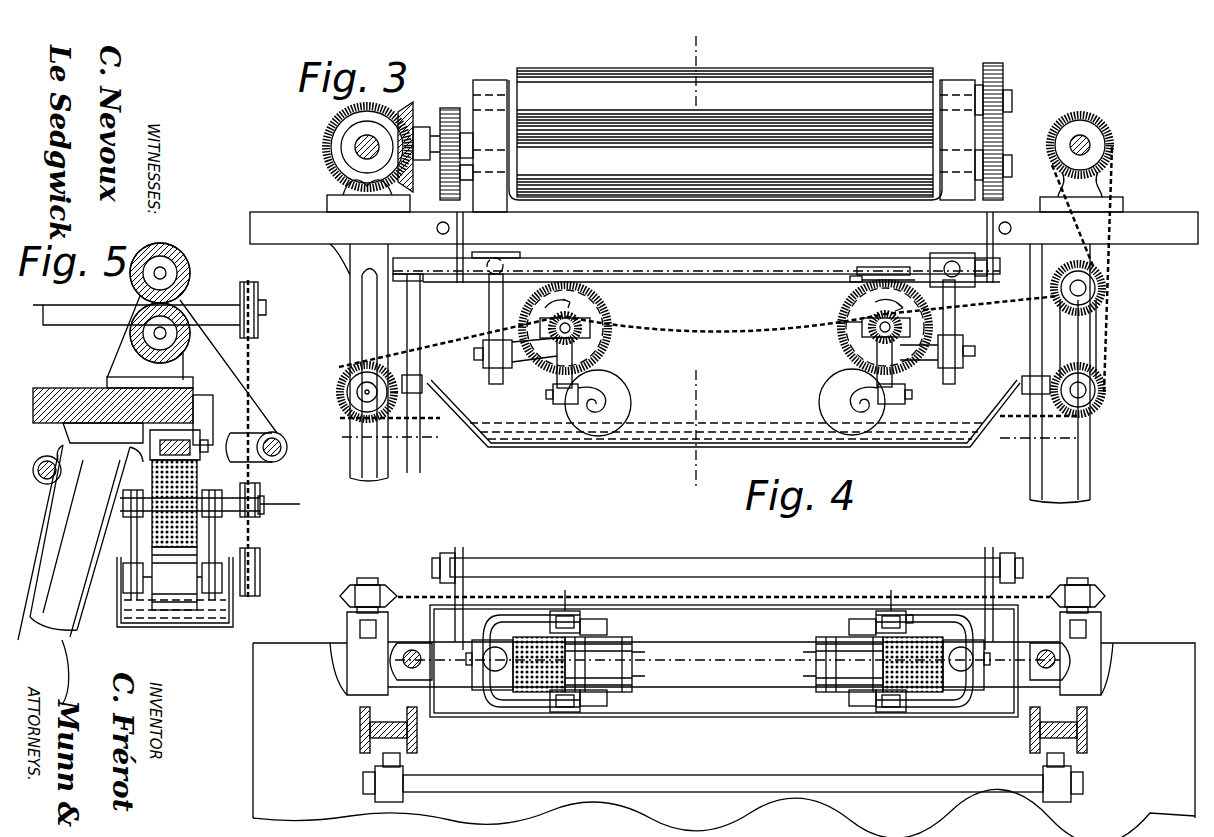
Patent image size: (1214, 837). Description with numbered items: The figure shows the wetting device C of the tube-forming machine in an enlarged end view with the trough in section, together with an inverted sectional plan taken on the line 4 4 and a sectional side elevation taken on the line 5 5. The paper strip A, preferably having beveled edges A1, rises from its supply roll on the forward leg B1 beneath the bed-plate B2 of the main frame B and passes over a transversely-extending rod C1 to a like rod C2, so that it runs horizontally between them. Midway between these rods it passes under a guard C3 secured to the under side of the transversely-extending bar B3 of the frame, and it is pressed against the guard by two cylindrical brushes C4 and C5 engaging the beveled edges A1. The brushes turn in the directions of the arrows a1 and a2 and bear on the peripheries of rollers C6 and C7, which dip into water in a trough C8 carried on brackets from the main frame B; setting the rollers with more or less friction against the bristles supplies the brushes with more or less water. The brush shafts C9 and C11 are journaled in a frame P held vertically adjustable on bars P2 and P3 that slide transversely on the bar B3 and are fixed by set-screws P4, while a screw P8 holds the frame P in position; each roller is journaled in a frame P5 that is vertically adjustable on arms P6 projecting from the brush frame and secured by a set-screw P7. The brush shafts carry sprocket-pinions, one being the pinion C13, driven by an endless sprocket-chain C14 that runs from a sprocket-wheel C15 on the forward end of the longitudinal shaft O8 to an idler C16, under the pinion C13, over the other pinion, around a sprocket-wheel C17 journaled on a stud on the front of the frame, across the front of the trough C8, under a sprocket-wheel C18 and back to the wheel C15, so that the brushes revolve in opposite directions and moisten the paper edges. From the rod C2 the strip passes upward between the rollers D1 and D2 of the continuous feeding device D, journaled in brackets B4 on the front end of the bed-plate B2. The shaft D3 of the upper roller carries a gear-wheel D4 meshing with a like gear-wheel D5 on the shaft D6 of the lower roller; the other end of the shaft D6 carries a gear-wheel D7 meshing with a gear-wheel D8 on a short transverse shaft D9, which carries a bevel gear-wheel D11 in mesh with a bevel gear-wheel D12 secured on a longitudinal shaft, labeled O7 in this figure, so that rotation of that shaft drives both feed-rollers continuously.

In FIG. 3, the main frame B is at (335, 196).
In FIG. 5, the main frame B is at (139, 376).
In FIG. 3, the forward leg B1 is at (420, 472).
In FIG. 4, the forward leg B1 is at (360, 730).
In FIG. 5, the forward leg B1 is at (75, 640).
In FIG. 4, the bed-plate B2 is at (724, 740).
In FIG. 5, the bed-plate B2 is at (58, 390).
In FIG. 3, the transversely-extending bar B3 is at (935, 253).
In FIG. 5, the transversely-extending bar B3 is at (152, 440).
In FIG. 3, the brackets B4 is at (500, 84).
In FIG. 5, the brackets B4 is at (128, 350).
In FIG. 3, the feed-rollers D is at (725, 123).
In FIG. 5, the feed-rollers D is at (170, 248).
In FIG. 3, the upper roller D1 is at (725, 100).
In FIG. 5, the upper roller D1 is at (188, 262).
In FIG. 3, the lower roller D2 is at (725, 164).
In FIG. 5, the lower roller D2 is at (185, 355).
In FIG. 3, the shaft D3 is at (1006, 92).
In FIG. 3, the gear-wheel D4 is at (1004, 68).
In FIG. 3, the gear-wheel D5 is at (1000, 188).
In FIG. 3, the shaft D6 is at (1008, 160).
In FIG. 3, the gear-wheel D7 is at (445, 182).
In FIG. 3, the gear-wheel D8 is at (450, 107).
In FIG. 3, the short transversely-extending shaft D9 is at (432, 130).
In FIG. 3, the bevel gear-wheel D11 is at (400, 110).
In FIG. 3, the bevel gear-wheel D12 is at (328, 138).
In FIG. 3, the shaft O7 is at (356, 148).
In FIG. 3, the longitudinally-extending shaft O8 is at (1086, 135).
In FIG. 5, the longitudinally-extending shaft O8 is at (235, 305).
In FIG. 3, the paper strip A is at (569, 284).
In FIG. 5, the paper strip A is at (238, 367).
In FIG. 3, the beveled edges A1 is at (888, 258).
In FIG. 4, the wetting device C is at (892, 592).
In FIG. 5, the wetting device C is at (280, 520).
In FIG. 4, the transversely-extending rod C1 is at (730, 776).
In FIG. 5, the transversely-extending rod C1 is at (34, 478).
In FIG. 3, the rod C2 is at (705, 258).
In FIG. 4, the rod C2 is at (675, 560).
In FIG. 5, the rod C2 is at (285, 455).
In FIG. 3, the guard C3 is at (862, 266).
In FIG. 4, the guard C3 is at (733, 641).
In FIG. 5, the guard C3 is at (158, 466).
In FIG. 3, the brush C4 is at (610, 318).
In FIG. 4, the brush C4 is at (530, 692).
In FIG. 3, the brush C5 is at (845, 300).
In FIG. 4, the brush C5 is at (905, 692).
In FIG. 5, the brush C5 is at (198, 490).
In FIG. 3, the roller C6 is at (624, 390).
In FIG. 4, the roller C6 is at (634, 660).
In FIG. 3, the roller C7 is at (830, 382).
In FIG. 4, the roller C7 is at (816, 660).
In FIG. 5, the roller C7 is at (178, 620).
In FIG. 3, the trough C8 is at (665, 450).
In FIG. 4, the trough C8 is at (460, 718).
In FIG. 5, the trough C8 is at (226, 628).
In FIG. 3, the shaft C9 is at (582, 334).
In FIG. 3, the shaft C11 is at (862, 325).
In FIG. 3, the sprocket-pinion C13 is at (887, 314).
In FIG. 5, the sprocket-pinion C13 is at (264, 506).
In FIG. 3, the endless sprocket-chain C14 is at (1108, 205).
In FIG. 4, the endless sprocket-chain C14 is at (742, 595).
In FIG. 3, the sprocket-wheel C15 is at (1062, 138).
In FIG. 5, the sprocket-wheel C15 is at (260, 300).
In FIG. 3, the idler C16 is at (1055, 293).
In FIG. 5, the idler C16 is at (260, 492).
In FIG. 3, the sprocket-wheel C17 is at (342, 378).
In FIG. 4, the sprocket-wheel C17 is at (362, 590).
In FIG. 3, the sprocket-wheel C18 is at (1103, 392).
In FIG. 4, the sprocket-wheel C18 is at (1090, 590).
In FIG. 5, the sprocket-wheel C18 is at (262, 582).
In FIG. 3, the frame P is at (530, 362).
In FIG. 5, the frame P is at (86, 541).
In FIG. 3, the bar P2 is at (489, 316).
In FIG. 3, the bar P3 is at (956, 300).
In FIG. 3, the set-screws P4 is at (496, 258).
In FIG. 5, the set-screws P4 is at (207, 420).
In FIG. 3, the frame P5 is at (630, 403).
In FIG. 4, the frame P5 is at (528, 616).
In FIG. 5, the frame P5 is at (123, 580).
In FIG. 3, the arms P6 is at (573, 333).
In FIG. 4, the arms P6 is at (566, 612).
In FIG. 5, the arms P6 is at (132, 535).
In FIG. 3, the set-screw P7 is at (553, 396).
In FIG. 4, the set-screw P7 is at (910, 615).
In FIG. 3, the screw P8 is at (480, 354).
In FIG. 4, the screw P8 is at (470, 655).
In FIG. 3, the arrow a1 is at (557, 301).
In FIG. 3, the arrow a2 is at (910, 298).
In FIG. 3, the section line 4 is at (721, 439).
In FIG. 3, the section line 5 is at (699, 272).